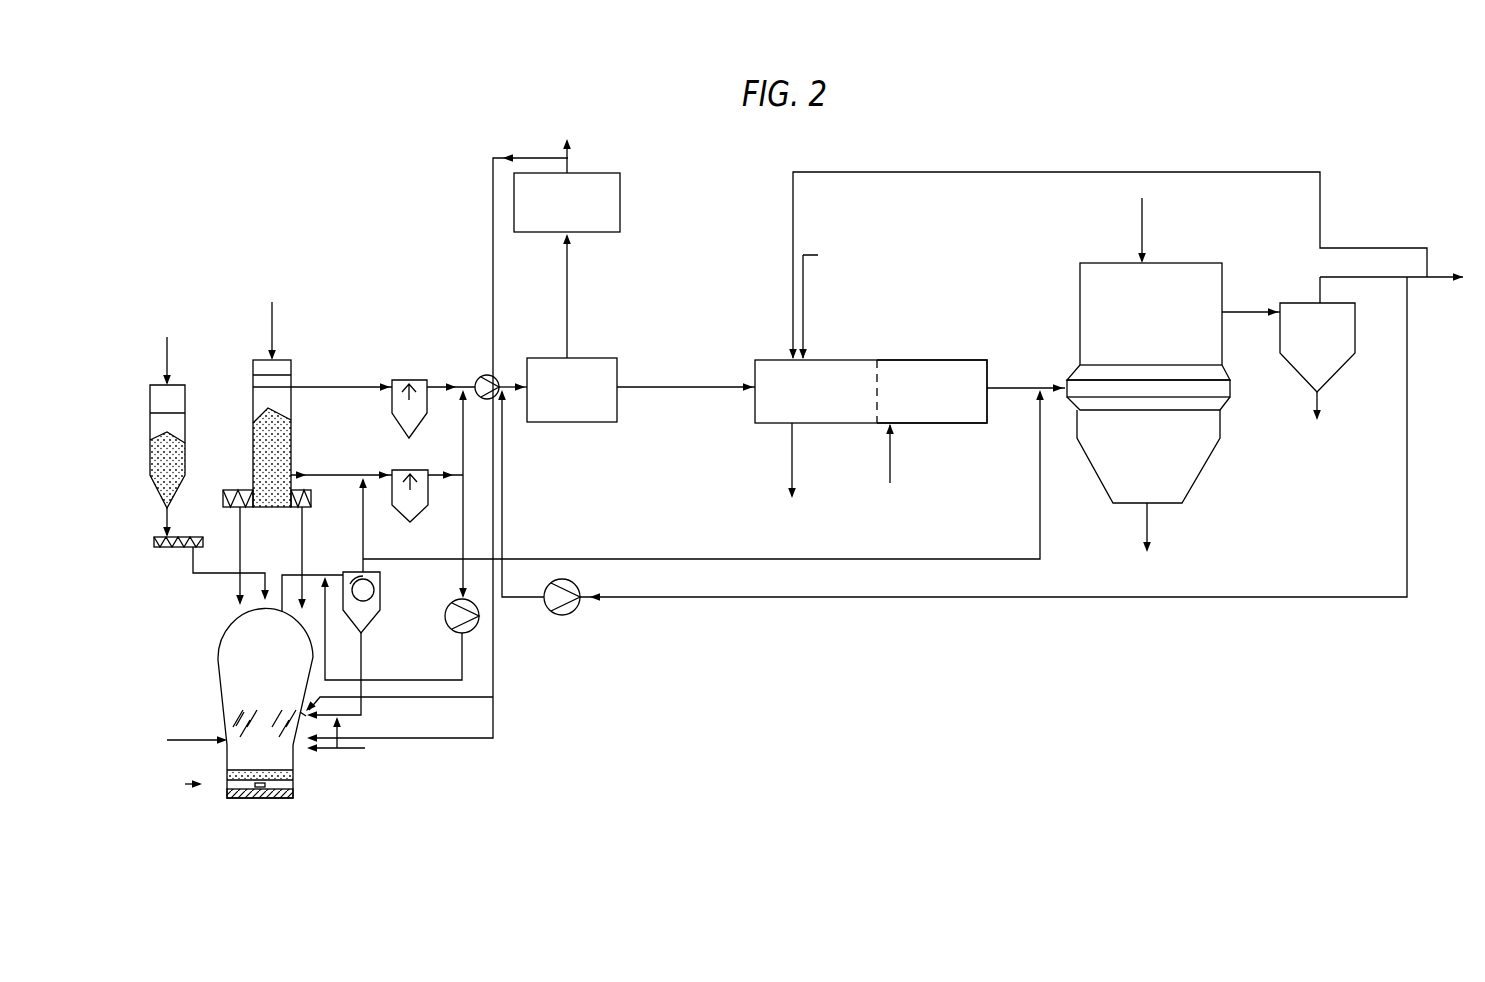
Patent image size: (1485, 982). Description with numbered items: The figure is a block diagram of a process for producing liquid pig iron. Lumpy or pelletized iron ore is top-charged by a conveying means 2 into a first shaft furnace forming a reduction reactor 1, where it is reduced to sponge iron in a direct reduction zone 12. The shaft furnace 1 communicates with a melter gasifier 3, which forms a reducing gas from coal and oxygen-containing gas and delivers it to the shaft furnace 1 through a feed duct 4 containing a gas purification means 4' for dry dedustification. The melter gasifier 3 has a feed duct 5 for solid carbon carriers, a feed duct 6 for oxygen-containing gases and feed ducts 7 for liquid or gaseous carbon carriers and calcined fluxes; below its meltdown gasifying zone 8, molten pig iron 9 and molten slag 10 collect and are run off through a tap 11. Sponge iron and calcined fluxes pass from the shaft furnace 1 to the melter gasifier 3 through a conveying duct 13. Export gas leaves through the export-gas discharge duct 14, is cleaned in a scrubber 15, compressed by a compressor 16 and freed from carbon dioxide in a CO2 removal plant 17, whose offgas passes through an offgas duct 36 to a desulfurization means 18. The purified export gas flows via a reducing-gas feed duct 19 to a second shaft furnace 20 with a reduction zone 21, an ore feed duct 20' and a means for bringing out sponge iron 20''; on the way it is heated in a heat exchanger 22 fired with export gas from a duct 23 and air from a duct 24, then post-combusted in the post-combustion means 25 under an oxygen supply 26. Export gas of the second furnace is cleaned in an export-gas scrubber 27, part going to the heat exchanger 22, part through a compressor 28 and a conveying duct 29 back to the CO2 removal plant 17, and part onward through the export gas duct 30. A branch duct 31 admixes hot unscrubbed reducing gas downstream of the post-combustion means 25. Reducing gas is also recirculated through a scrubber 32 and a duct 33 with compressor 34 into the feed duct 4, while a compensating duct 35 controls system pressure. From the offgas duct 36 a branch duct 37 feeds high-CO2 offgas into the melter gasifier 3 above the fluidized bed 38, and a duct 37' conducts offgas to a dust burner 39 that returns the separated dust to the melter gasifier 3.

The reduction reactor (first shaft furnace) 1 is at (292, 366).
The conveying means 2 is at (275, 328).
The melter gasifier 3 is at (215, 657).
The feed duct 4 is at (324, 545).
The gas purification means (dust removal cyclone) 4' is at (356, 645).
The feed duct for solid carbon carriers 5 is at (213, 573).
The feed duct for oxygen-containing gases 6 is at (345, 750).
The feed ducts for liquid or gaseous carbon carriers and calcined fluxes 7 is at (212, 740).
The meltdown gasifying zone 8 is at (268, 720).
The molten pig iron 9 is at (282, 787).
The molten slag 10 is at (225, 773).
The tap 11 is at (210, 787).
The direct reduction zone 12 is at (263, 443).
The conveying duct 13 is at (302, 536).
The export-gas discharge duct 14 is at (446, 387).
The scrubber 15 is at (409, 380).
The compressor 16 is at (485, 376).
The CO2 removal plant 17 is at (572, 398).
The desulfurization means 18 is at (576, 214).
The reducing-gas feed duct 19 is at (640, 388).
The second reduction shaft furnace 20 is at (1114, 376).
The ore feed duct 20' is at (1169, 230).
The means for bringing out sponge iron 20'' is at (1180, 527).
The reduction zone 21 is at (1162, 328).
The heating means (heat exchanger, recuperator) 22 is at (817, 400).
The duct 23 is at (967, 172).
The duct 24 is at (805, 322).
The post-combustion means 25 is at (952, 400).
The oxygen supply 26 is at (890, 450).
The export-gas scrubber 27 is at (1329, 339).
The compressor 28 is at (558, 617).
The conveying duct 29 is at (698, 600).
The export gas duct 30 is at (1433, 280).
The branch duct 31 is at (890, 559).
The scrubber 32 is at (412, 510).
The duct 33 is at (462, 507).
The compressor 34 is at (452, 612).
The compensating duct 35 is at (462, 450).
The offgas duct 36 is at (568, 292).
The branch duct 37 is at (437, 448).
The duct 37' is at (398, 717).
The fluidized bed 38 is at (245, 706).
The dust burner 39 is at (300, 712).